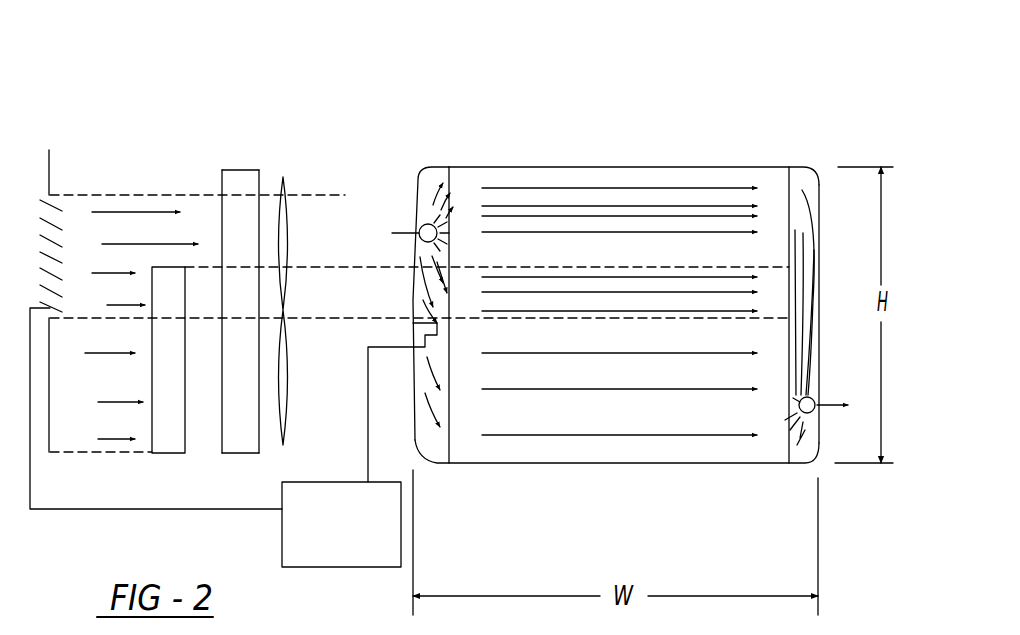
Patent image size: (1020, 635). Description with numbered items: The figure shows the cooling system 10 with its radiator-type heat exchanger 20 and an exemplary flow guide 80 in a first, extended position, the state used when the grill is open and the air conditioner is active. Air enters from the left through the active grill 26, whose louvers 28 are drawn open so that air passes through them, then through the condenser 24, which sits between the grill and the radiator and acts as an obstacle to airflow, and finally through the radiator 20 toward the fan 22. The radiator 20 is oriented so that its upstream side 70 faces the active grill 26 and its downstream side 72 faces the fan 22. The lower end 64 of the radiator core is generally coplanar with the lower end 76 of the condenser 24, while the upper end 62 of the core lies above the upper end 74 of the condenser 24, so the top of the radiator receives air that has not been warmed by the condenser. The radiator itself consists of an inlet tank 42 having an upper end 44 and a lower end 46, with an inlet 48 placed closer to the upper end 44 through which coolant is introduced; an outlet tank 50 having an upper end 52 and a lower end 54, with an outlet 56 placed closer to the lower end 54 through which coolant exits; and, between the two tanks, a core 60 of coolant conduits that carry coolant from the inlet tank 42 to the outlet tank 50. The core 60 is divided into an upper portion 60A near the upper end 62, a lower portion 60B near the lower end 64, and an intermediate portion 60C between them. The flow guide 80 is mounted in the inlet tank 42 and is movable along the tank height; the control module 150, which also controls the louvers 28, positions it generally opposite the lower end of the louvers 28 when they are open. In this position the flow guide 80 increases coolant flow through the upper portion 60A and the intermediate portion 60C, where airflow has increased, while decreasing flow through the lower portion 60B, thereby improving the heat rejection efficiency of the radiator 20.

The cooling system 10 is at (130, 110).
The heat exchanger 20 is at (242, 193).
The fan 22 is at (290, 197).
The condenser 24 is at (173, 438).
The active grill 26 is at (48, 167).
The louvers 28 is at (55, 207).
The inlet tank 42 is at (415, 282).
The upper end 44 is at (438, 167).
The lower end 46 is at (425, 467).
The inlet 48 is at (417, 223).
The outlet tank 50 is at (805, 177).
The upper end 52 is at (793, 165).
The lower end 54 is at (803, 463).
The outlet 56 is at (816, 398).
The core 60 is at (673, 322).
The upper portion 60A is at (642, 180).
The lower portion 60B is at (640, 463).
The intermediate portion 60C is at (777, 297).
The upper end 62 is at (230, 170).
The lower end 64 is at (227, 455).
The upstream side 70 is at (222, 213).
The downstream side 72 is at (263, 190).
The upper end 74 is at (168, 265).
The lower end 76 is at (160, 453).
The flow guide 80 is at (417, 332).
The control module 150 is at (313, 567).